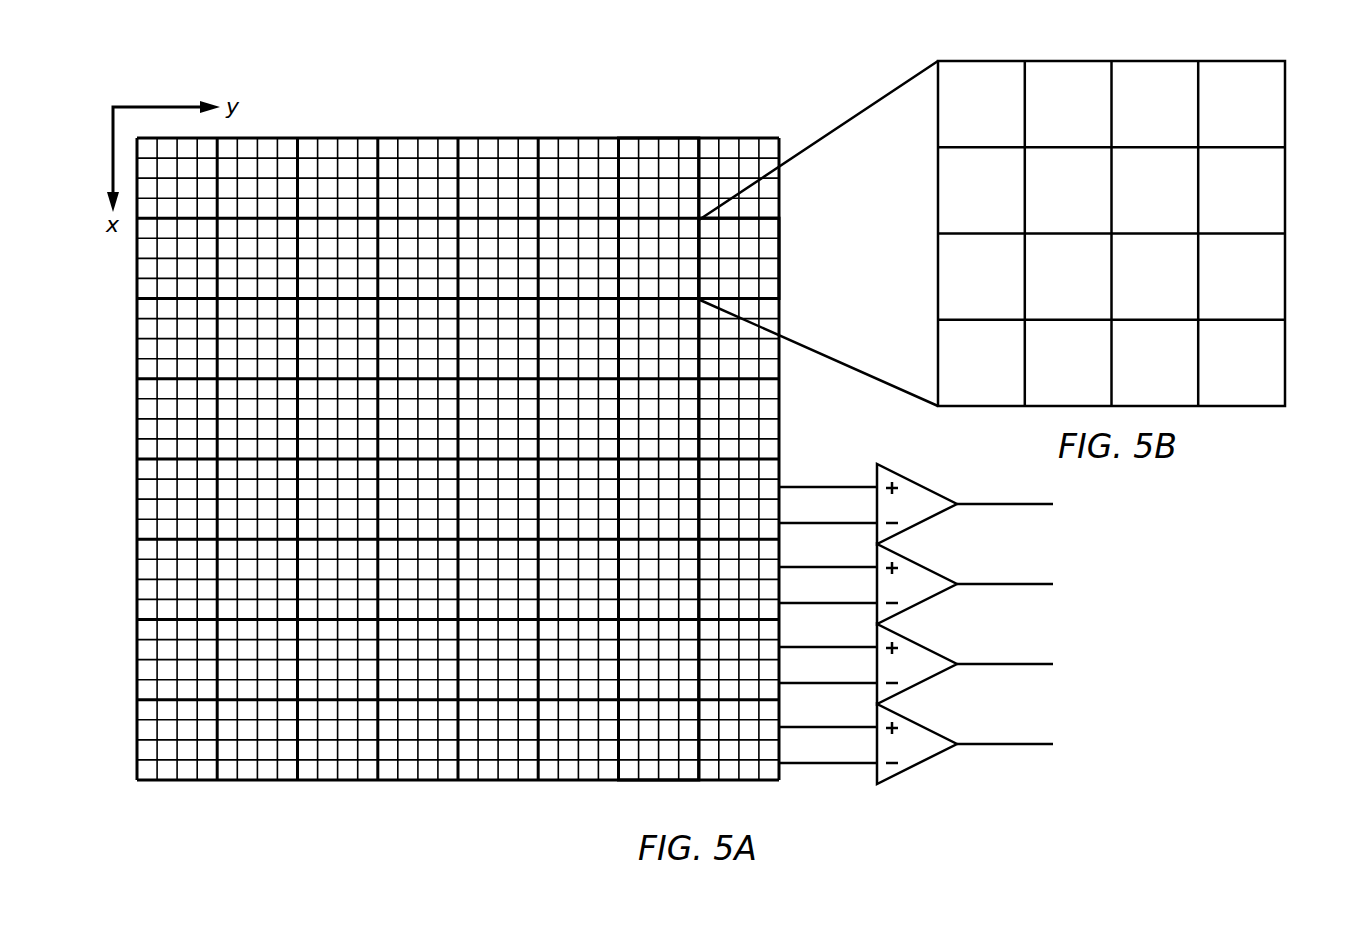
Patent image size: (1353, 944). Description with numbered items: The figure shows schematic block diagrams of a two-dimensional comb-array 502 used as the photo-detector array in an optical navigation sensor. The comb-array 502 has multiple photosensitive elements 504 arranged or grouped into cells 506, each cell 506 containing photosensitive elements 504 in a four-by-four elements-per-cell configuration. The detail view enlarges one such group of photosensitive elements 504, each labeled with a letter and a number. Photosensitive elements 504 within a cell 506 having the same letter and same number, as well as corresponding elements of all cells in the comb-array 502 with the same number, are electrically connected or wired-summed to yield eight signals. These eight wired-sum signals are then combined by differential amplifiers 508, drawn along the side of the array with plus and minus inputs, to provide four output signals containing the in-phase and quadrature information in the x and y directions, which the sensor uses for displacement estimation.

In FIG. 5A, the 2D comb-array 502 is at (237, 219).
In FIG. 5A, the photosensitive elements 504 is at (779, 228).
In FIG. 5B, the photosensitive elements 504 is at (1285, 103).
In FIG. 5A, the cell 506 is at (699, 138).
In FIG. 5A, the differential amplifiers 508 is at (912, 798).